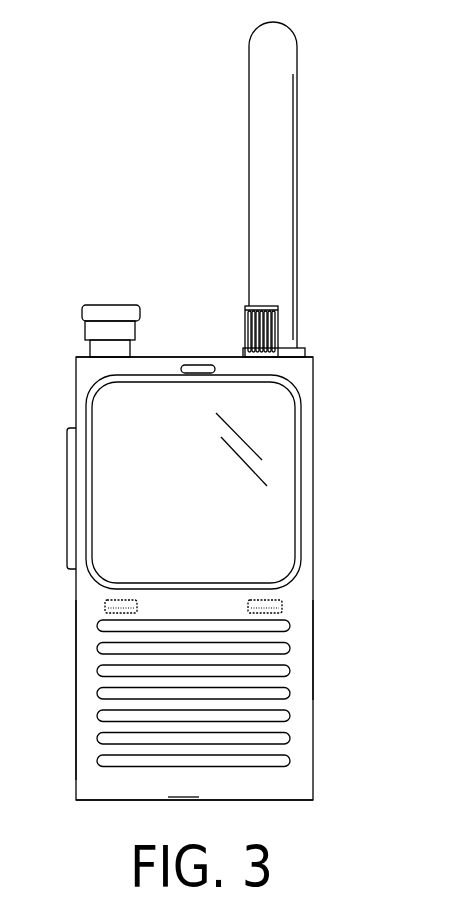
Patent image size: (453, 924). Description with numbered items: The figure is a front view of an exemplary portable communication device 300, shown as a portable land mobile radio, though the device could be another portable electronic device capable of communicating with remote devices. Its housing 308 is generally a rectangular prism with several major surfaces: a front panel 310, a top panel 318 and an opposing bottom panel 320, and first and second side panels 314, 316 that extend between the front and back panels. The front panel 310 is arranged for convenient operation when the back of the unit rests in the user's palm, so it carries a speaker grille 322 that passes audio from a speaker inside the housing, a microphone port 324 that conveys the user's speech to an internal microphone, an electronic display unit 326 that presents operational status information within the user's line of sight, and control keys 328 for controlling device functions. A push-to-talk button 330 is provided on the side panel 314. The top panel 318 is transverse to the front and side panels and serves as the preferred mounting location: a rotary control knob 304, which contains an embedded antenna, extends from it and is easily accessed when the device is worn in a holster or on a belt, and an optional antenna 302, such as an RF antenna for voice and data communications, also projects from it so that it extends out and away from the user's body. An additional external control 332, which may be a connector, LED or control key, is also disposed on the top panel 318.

The portable communication device 300 is at (357, 546).
The antenna 302 is at (255, 97).
The rotary control knob 304 is at (82, 313).
The housing 308 is at (184, 787).
The front panel 310 is at (305, 723).
The first side panel 314 is at (76, 682).
The second side panel 316 is at (313, 642).
The top panel 318 is at (148, 357).
The bottom panel 320 is at (260, 800).
The speaker grille 322 is at (90, 781).
The microphone port 324 is at (193, 364).
The electronic display unit 326 is at (285, 473).
The control keys 328 is at (104, 605).
The push-to-talk button 330 is at (68, 495).
The control 332 is at (262, 304).